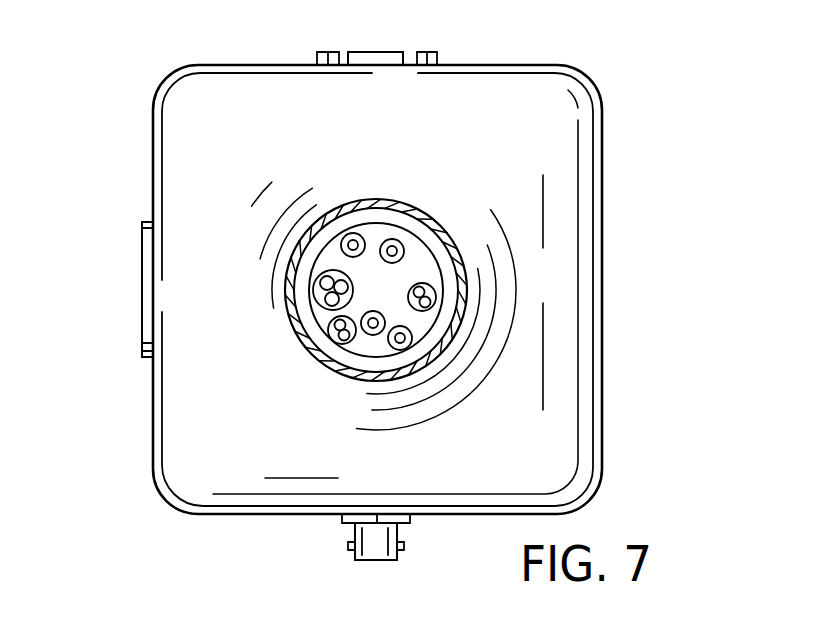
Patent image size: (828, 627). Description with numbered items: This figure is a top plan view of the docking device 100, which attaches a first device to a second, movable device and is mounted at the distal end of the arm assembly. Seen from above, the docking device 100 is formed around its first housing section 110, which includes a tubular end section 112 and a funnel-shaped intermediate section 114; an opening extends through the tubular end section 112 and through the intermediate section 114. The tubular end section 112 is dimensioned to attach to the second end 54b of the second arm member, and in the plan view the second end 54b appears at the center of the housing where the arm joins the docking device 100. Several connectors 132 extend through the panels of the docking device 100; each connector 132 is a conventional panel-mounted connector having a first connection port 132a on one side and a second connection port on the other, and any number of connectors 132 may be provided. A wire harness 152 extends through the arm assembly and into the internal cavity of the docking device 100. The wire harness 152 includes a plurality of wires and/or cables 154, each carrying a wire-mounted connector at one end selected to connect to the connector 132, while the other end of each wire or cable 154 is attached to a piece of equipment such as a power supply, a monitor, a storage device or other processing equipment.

The docking device 100 is at (393, 312).
The first housing section 110 is at (608, 414).
The tubular end section 112 is at (333, 227).
The intermediate section 114 is at (563, 315).
The connector 132 is at (396, 50).
The first connection port 132a is at (388, 52).
The wire harness 152 is at (421, 246).
The wires and/or cables 154 is at (392, 248).
The second end of second arm member 54b is at (350, 378).